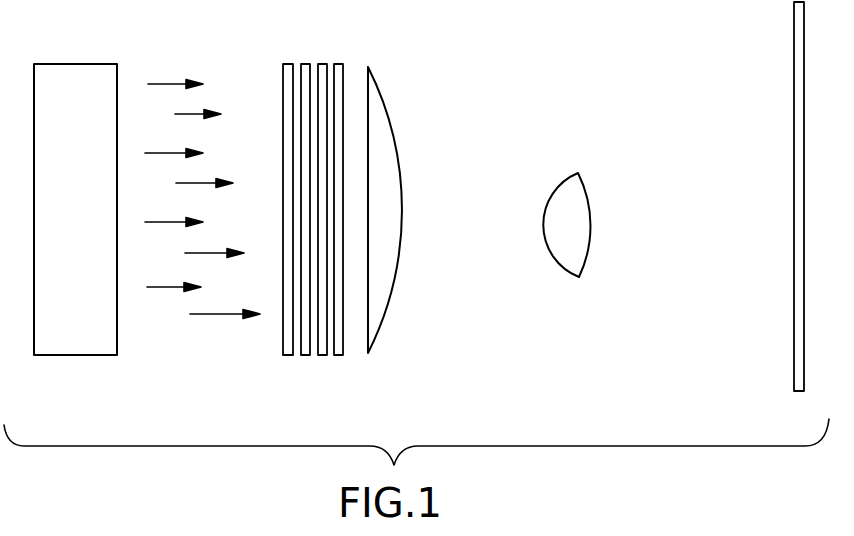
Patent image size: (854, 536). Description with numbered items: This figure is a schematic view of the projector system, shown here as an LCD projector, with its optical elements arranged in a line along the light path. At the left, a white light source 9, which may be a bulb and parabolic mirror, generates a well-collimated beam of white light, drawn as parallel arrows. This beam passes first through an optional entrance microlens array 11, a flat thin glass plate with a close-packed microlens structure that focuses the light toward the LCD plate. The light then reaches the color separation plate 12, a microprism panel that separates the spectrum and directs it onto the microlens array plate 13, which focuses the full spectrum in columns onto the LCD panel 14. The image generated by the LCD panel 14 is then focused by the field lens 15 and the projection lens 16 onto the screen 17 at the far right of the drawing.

The white light source 9 is at (103, 97).
The entrance microlens array 11 is at (284, 356).
The color separation plate 12 is at (305, 64).
The microlens array plate 13 is at (323, 356).
The LCD panel 14 is at (340, 64).
The field lens 15 is at (383, 105).
The projection lens 16 is at (580, 192).
The screen 17 is at (795, 55).